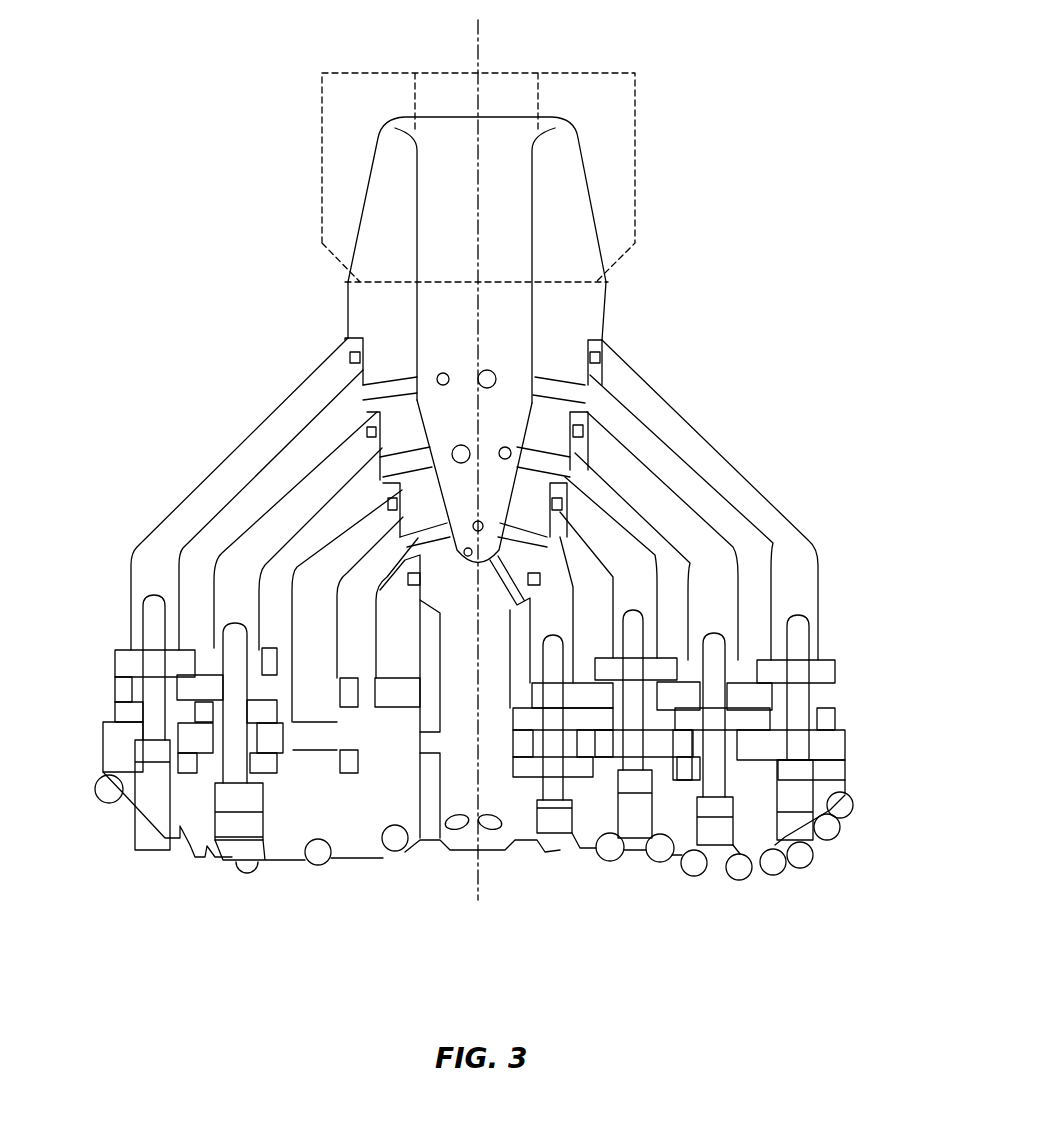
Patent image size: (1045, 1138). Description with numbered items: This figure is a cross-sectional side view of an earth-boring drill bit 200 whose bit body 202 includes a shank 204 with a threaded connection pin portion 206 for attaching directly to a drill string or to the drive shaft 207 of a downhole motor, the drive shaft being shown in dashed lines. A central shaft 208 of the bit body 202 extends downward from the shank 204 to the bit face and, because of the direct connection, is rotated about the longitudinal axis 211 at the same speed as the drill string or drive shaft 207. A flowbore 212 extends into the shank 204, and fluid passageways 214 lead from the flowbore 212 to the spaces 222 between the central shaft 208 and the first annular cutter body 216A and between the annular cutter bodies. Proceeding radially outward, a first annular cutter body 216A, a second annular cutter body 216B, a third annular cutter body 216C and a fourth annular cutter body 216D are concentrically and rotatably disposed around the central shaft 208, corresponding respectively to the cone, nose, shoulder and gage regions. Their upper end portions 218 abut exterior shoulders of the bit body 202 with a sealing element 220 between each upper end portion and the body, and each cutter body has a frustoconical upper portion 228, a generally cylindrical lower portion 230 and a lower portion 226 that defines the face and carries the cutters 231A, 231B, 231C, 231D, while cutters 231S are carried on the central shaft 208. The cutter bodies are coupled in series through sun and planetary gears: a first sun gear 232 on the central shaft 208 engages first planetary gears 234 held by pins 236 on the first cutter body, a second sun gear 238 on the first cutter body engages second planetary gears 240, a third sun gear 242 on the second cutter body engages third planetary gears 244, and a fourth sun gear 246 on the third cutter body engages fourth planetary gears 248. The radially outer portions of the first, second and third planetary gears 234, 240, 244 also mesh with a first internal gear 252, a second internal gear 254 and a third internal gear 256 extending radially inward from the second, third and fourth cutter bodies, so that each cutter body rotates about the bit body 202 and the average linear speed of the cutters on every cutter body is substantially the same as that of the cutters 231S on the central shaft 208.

The drill bit 200 is at (245, 263).
The bit body 202 is at (590, 300).
The shank 204 is at (570, 186).
The threaded connection pin portion 206 is at (567, 226).
The drive shaft 207 is at (640, 110).
The central shaft 208 is at (460, 840).
The longitudinal axis 211 is at (478, 32).
The flowbore 212 is at (450, 322).
The fluid passageways 214 is at (492, 376).
The first annular cutter body 216A is at (630, 590).
The second annular cutter body 216B is at (713, 592).
The third annular cutter body 216C is at (733, 587).
The fourth annular cutter body 216D is at (800, 597).
The upper end portions 218 is at (593, 437).
The sealing element 220 is at (330, 480).
The spaces 222 is at (300, 553).
The lower portion 226 is at (178, 800).
The frustoconical upper portion 228 is at (317, 483).
The generally cylindrical lower portion 230 is at (227, 583).
The cutters 231A is at (388, 850).
The cutters 231B is at (318, 865).
The cutters 231C is at (245, 870).
The cutters 231D is at (100, 795).
The cutters 231S is at (470, 830).
The first sun gear 232 is at (517, 745).
The first planetary gears 234 is at (527, 775).
The pins 236 is at (233, 715).
The second sun gear 238 is at (582, 700).
The second planetary gears 240 is at (618, 780).
The third sun gear 242 is at (668, 748).
The third planetary gears 244 is at (713, 745).
The fourth sun gear 246 is at (743, 690).
The fourth planetary gears 248 is at (823, 720).
The first internal gear 252 is at (345, 768).
The second internal gear 254 is at (270, 660).
The third internal gear 256 is at (190, 758).